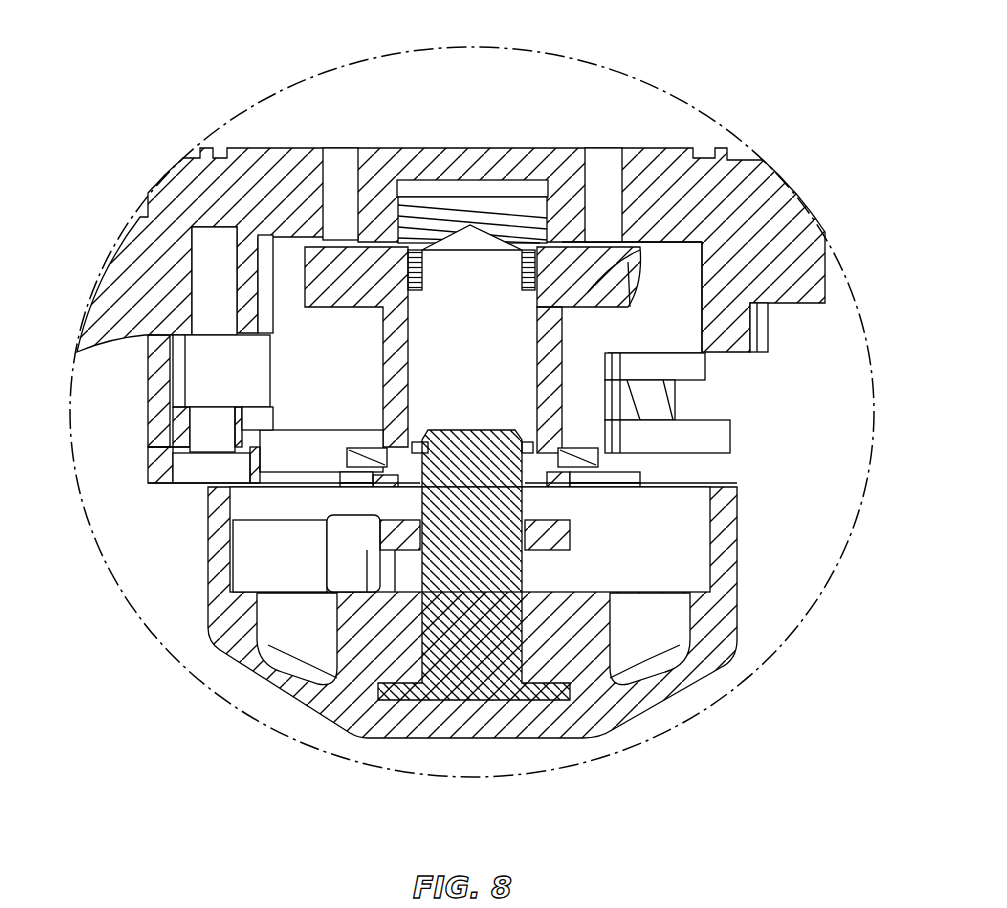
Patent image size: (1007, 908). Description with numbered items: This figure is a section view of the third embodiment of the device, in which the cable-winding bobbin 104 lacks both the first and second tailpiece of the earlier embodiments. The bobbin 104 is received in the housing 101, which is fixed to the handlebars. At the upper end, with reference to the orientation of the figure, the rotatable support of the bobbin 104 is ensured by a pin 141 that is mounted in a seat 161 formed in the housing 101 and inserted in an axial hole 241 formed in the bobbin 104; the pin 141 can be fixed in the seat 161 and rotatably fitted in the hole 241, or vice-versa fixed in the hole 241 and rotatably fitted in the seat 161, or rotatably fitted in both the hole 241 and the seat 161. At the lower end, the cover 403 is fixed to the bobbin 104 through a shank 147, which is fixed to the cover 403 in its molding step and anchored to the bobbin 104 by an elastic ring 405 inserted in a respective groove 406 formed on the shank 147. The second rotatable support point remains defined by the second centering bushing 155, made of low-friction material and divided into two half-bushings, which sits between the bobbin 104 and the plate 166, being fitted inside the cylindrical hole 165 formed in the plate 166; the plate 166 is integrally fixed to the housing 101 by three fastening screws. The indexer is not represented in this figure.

The housing 101 is at (772, 193).
The cable-winding bobbin 104 is at (597, 236).
The pin 141 is at (487, 210).
The seat 161 is at (403, 187).
The axial hole 241 is at (528, 322).
The elastic ring 405 is at (608, 402).
The groove 406 is at (527, 477).
The second centering bushing 155 is at (382, 481).
The cylindrical hole 165 is at (393, 520).
The plate 166 is at (160, 458).
The cover 403 is at (223, 637).
The shank 147 is at (480, 580).